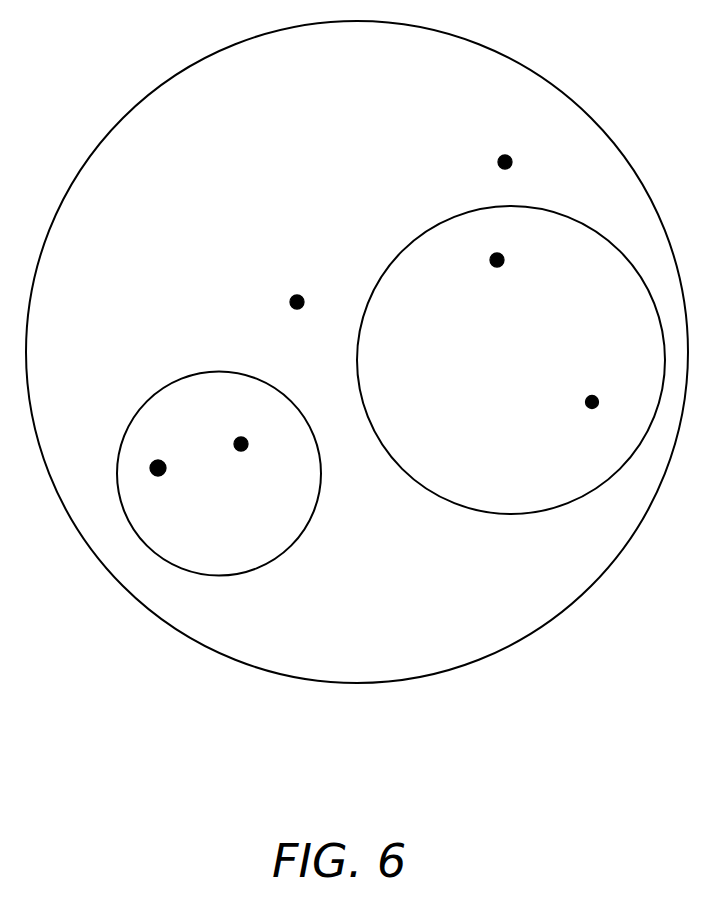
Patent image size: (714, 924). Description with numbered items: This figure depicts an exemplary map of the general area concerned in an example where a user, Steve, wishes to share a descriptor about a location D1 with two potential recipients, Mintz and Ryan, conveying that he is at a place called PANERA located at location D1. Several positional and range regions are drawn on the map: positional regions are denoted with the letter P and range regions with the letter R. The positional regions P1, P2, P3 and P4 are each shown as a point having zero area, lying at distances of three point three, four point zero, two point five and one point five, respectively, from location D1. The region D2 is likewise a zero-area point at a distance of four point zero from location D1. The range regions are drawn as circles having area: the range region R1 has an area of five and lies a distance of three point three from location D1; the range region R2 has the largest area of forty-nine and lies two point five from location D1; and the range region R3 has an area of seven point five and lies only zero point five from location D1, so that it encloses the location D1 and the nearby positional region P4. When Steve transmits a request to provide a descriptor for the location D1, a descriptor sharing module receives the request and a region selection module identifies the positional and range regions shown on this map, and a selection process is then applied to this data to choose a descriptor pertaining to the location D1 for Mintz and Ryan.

The range region R1 is at (505, 514).
The range region R2 is at (358, 682).
The range region R3 is at (308, 525).
The positional region P1 is at (499, 247).
The positional region P2 is at (507, 151).
The positional region P3 is at (298, 291).
The positional region P4 is at (160, 456).
The location D1 is at (241, 430).
The region D2 is at (594, 388).